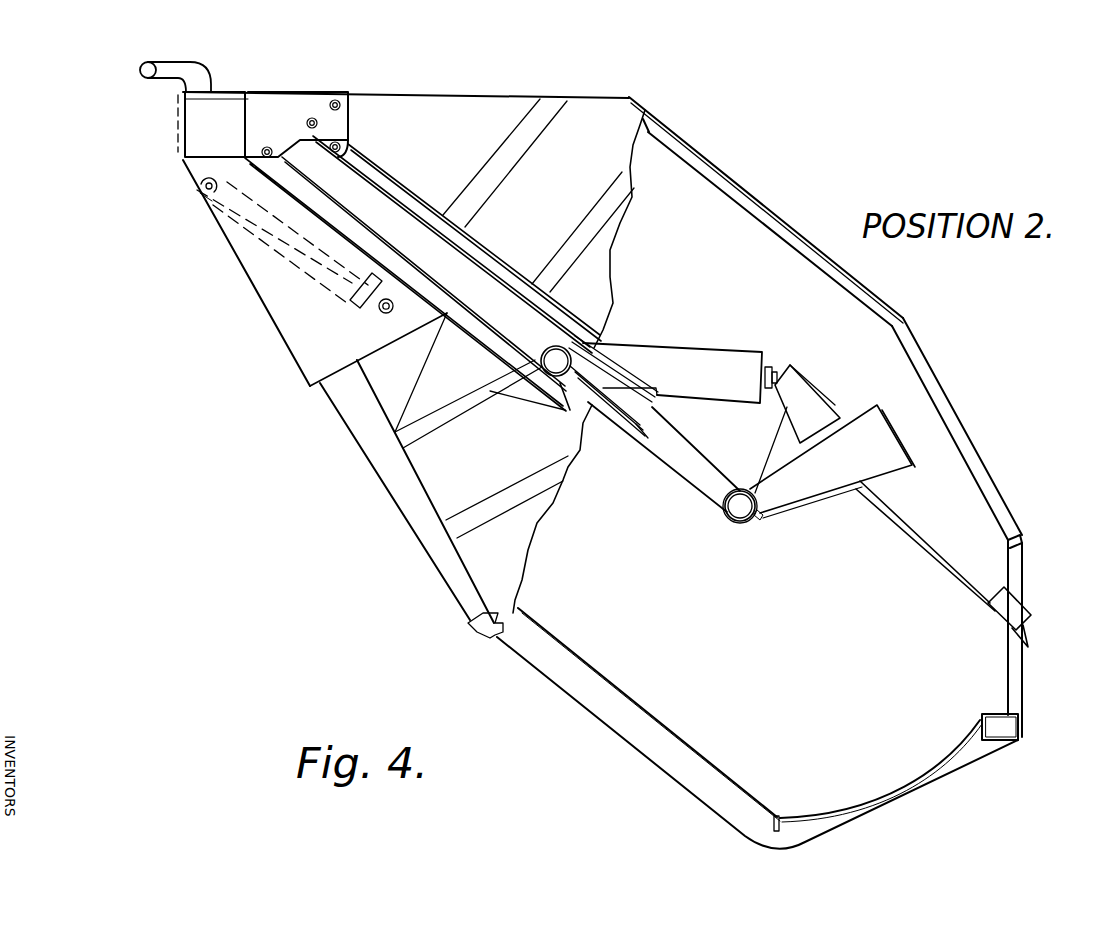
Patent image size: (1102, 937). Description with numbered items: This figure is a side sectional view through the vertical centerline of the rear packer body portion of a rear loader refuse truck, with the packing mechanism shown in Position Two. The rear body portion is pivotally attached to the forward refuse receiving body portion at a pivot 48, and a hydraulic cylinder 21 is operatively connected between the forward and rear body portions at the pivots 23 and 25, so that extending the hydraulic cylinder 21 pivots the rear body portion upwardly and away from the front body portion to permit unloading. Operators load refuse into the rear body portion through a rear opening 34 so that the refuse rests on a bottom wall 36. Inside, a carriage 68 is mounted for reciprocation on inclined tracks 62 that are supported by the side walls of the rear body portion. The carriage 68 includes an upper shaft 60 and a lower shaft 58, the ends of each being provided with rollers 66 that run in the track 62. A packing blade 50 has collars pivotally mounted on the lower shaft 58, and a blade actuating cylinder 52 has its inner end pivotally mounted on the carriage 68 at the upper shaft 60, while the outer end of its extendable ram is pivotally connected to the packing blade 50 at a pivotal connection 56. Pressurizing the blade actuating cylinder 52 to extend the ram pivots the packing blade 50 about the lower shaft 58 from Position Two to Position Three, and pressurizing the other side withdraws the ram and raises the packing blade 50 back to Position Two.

The hydraulic cylinder 21 is at (275, 240).
The pivot 23 is at (200, 190).
The pivot 25 is at (382, 312).
The rear opening 34 is at (987, 527).
The bottom wall 36 is at (855, 800).
The pivot 48 is at (140, 70).
The packing blade 50 is at (878, 432).
The blade actuating cylinder 52 is at (697, 353).
The pivotal connection 56 is at (793, 378).
The lower shaft 58 is at (742, 508).
The upper shaft 60 is at (595, 343).
The inclined tracks 62 is at (372, 208).
The rollers 66 is at (556, 361).
The carriage 68 is at (668, 455).